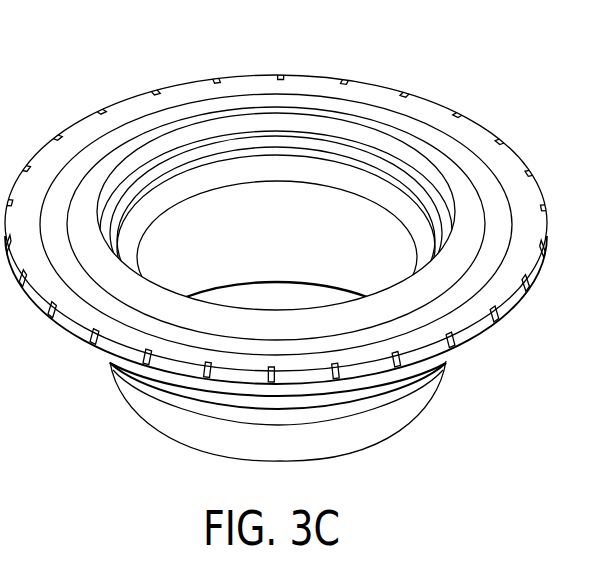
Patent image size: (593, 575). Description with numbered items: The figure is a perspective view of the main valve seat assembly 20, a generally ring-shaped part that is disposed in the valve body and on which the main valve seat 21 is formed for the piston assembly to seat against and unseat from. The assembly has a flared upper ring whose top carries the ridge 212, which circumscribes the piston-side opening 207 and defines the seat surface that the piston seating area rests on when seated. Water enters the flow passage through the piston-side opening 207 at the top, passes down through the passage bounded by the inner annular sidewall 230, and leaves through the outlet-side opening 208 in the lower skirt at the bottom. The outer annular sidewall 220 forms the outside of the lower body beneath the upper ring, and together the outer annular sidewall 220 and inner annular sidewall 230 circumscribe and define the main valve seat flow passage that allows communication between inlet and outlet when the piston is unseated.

The main valve seat assembly 20 is at (447, 73).
The main valve seat 21 is at (308, 112).
The piston-side opening 207 is at (185, 158).
The ridge 212 is at (465, 190).
The inner annular sidewall 230 is at (294, 243).
The outer annular sidewall 220 is at (177, 403).
The outlet-side opening 208 is at (370, 443).